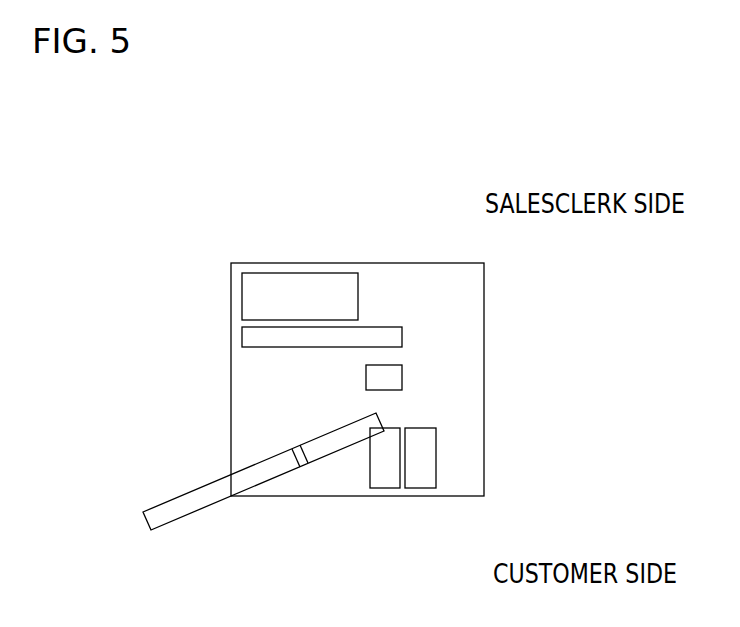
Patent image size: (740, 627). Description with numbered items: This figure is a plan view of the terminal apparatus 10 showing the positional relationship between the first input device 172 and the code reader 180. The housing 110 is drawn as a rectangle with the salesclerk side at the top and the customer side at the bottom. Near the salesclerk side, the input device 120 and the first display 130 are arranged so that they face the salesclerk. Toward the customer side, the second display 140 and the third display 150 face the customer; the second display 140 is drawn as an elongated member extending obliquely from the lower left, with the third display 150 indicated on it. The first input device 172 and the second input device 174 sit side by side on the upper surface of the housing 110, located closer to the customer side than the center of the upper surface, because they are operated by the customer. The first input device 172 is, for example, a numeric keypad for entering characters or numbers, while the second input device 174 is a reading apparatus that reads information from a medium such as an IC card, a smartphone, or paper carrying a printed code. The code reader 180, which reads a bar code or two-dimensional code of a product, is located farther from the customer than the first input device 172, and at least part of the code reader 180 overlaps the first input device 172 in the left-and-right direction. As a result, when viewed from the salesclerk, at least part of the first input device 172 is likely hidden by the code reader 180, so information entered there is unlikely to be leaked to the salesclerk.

The terminal apparatus 10 is at (360, 256).
The housing 110 is at (484, 302).
The input device 120 is at (306, 273).
The first display 130 is at (242, 337).
The second display 140 is at (217, 480).
The third display 150 is at (333, 430).
The first input device 172 is at (385, 490).
The second input device 174 is at (420, 490).
The code reader 180 is at (387, 378).